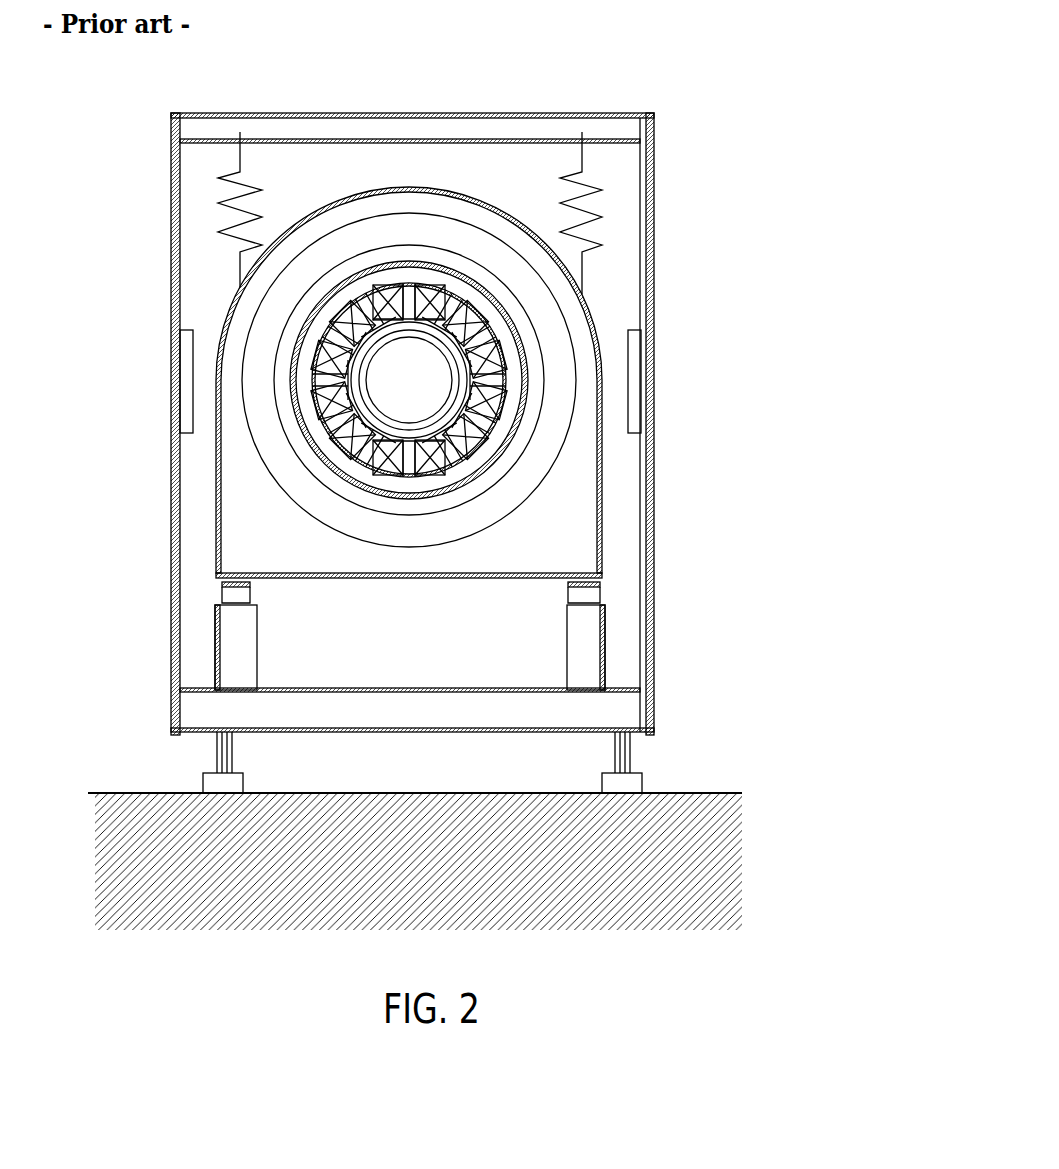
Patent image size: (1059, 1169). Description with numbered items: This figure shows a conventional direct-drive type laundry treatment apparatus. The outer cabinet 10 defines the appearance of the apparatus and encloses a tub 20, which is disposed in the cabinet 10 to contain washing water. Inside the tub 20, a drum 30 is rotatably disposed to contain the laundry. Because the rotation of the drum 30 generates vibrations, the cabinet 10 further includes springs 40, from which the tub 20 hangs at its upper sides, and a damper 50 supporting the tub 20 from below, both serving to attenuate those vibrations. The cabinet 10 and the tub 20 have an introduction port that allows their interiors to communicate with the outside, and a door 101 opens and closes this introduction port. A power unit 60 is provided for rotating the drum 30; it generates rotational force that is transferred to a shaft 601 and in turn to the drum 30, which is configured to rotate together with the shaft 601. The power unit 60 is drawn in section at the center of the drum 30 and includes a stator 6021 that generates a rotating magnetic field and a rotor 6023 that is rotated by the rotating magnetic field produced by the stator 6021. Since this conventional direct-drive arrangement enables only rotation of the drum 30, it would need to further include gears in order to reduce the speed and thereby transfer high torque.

The cabinet 10 is at (460, 128).
The door 101 is at (406, 212).
The tub 20 is at (342, 198).
The drum 30 is at (563, 305).
The springs 40 is at (593, 188).
The damper 50 is at (593, 642).
The power unit 60 is at (532, 380).
The shaft 601 is at (482, 322).
The stator 6021 is at (530, 381).
The rotor 6023 is at (537, 358).